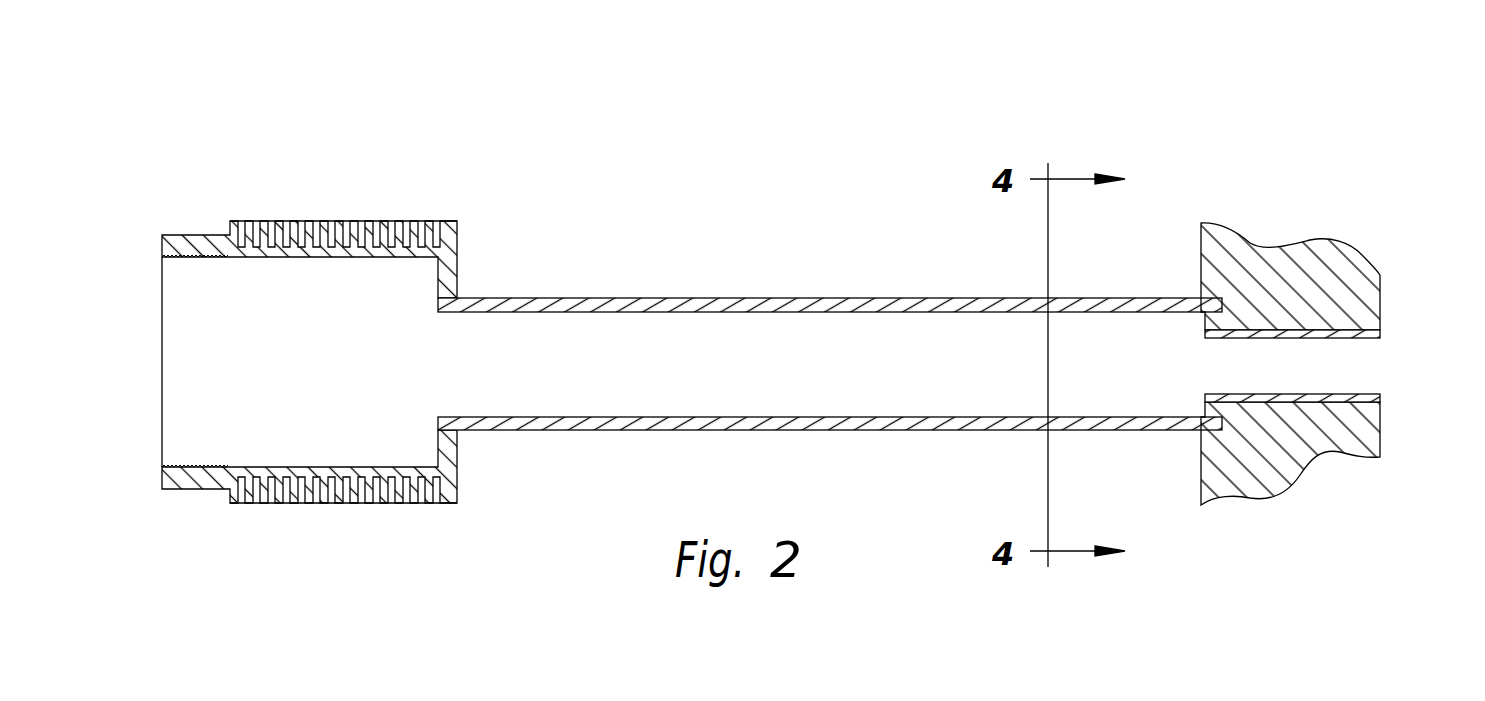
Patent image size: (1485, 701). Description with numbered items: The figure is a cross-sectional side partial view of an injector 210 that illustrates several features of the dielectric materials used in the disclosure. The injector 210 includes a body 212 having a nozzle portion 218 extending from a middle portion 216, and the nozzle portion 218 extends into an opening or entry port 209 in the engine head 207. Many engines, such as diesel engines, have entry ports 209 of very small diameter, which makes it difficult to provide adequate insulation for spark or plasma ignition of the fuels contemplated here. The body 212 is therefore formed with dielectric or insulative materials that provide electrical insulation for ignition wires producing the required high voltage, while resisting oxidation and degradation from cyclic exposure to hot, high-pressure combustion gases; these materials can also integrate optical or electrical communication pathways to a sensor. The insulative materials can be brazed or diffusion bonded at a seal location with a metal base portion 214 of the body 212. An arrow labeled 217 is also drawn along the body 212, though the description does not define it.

The injector 210 is at (572, 163).
The metal base portion 214 is at (370, 223).
The body 212 is at (582, 400).
The middle portion 216 is at (672, 298).
The flow direction 217 is at (826, 337).
The nozzle portion 218 is at (1357, 285).
The entry port 209 is at (1380, 413).
The engine head 207 is at (1324, 441).